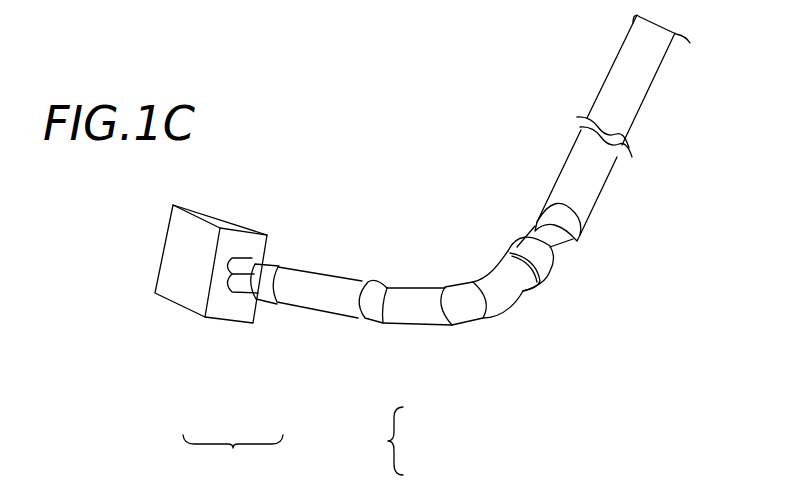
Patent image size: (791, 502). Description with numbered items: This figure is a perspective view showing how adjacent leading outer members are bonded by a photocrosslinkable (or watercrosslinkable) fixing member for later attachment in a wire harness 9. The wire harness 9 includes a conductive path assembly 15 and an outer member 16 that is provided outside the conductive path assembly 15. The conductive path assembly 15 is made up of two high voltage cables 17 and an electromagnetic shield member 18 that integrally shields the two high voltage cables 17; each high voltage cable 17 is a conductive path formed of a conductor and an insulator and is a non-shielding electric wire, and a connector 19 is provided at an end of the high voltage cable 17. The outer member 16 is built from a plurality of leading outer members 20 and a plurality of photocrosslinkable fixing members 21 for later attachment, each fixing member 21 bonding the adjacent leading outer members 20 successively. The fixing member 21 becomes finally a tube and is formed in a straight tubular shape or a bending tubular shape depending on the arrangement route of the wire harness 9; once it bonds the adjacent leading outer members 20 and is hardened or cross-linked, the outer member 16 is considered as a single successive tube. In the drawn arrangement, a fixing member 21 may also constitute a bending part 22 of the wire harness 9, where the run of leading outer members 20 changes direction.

The wire harness 9 is at (622, 182).
The conductive path assembly 15 is at (233, 456).
The outer member 16 is at (398, 439).
The high voltage cable 17 is at (238, 284).
The electromagnetic shield member 18 is at (258, 295).
The connector 19 is at (225, 218).
The leading outer member 20 is at (323, 280).
The photocrosslinkable fixing member 21 is at (373, 312).
The bending part 22 is at (425, 300).